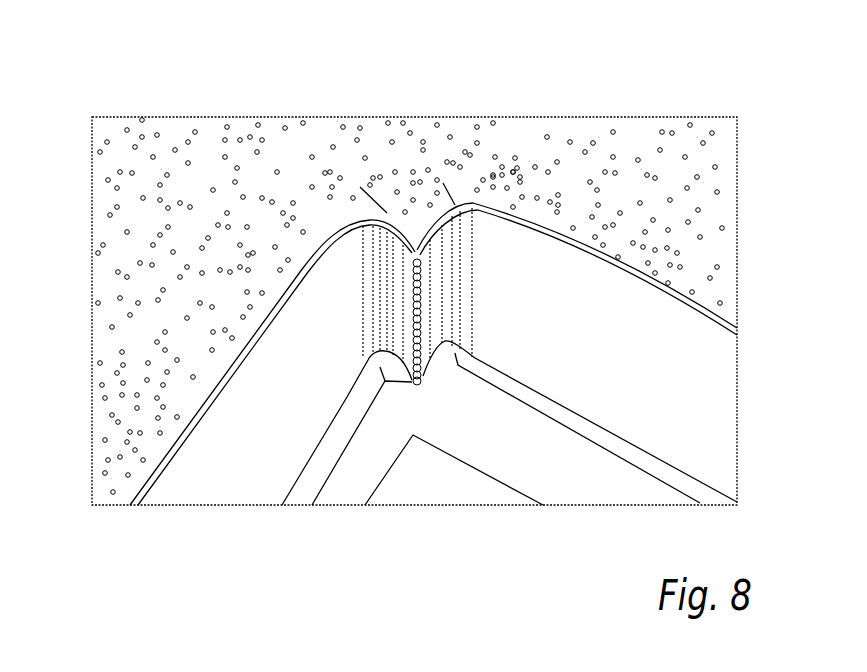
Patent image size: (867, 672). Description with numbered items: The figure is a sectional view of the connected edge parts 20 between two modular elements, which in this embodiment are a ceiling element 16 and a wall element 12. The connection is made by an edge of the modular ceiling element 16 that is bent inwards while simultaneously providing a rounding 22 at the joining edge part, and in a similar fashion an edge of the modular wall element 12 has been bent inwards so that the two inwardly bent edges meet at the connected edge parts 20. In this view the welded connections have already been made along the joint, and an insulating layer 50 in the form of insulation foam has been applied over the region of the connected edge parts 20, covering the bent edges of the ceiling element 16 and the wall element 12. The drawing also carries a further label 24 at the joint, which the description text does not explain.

The wall element 12 is at (652, 283).
The ceiling element 16 is at (205, 398).
The connected edge parts 20 is at (414, 249).
The rounding 22 is at (333, 227).
The second flange 24 is at (472, 203).
The insulating layer 50 is at (233, 208).